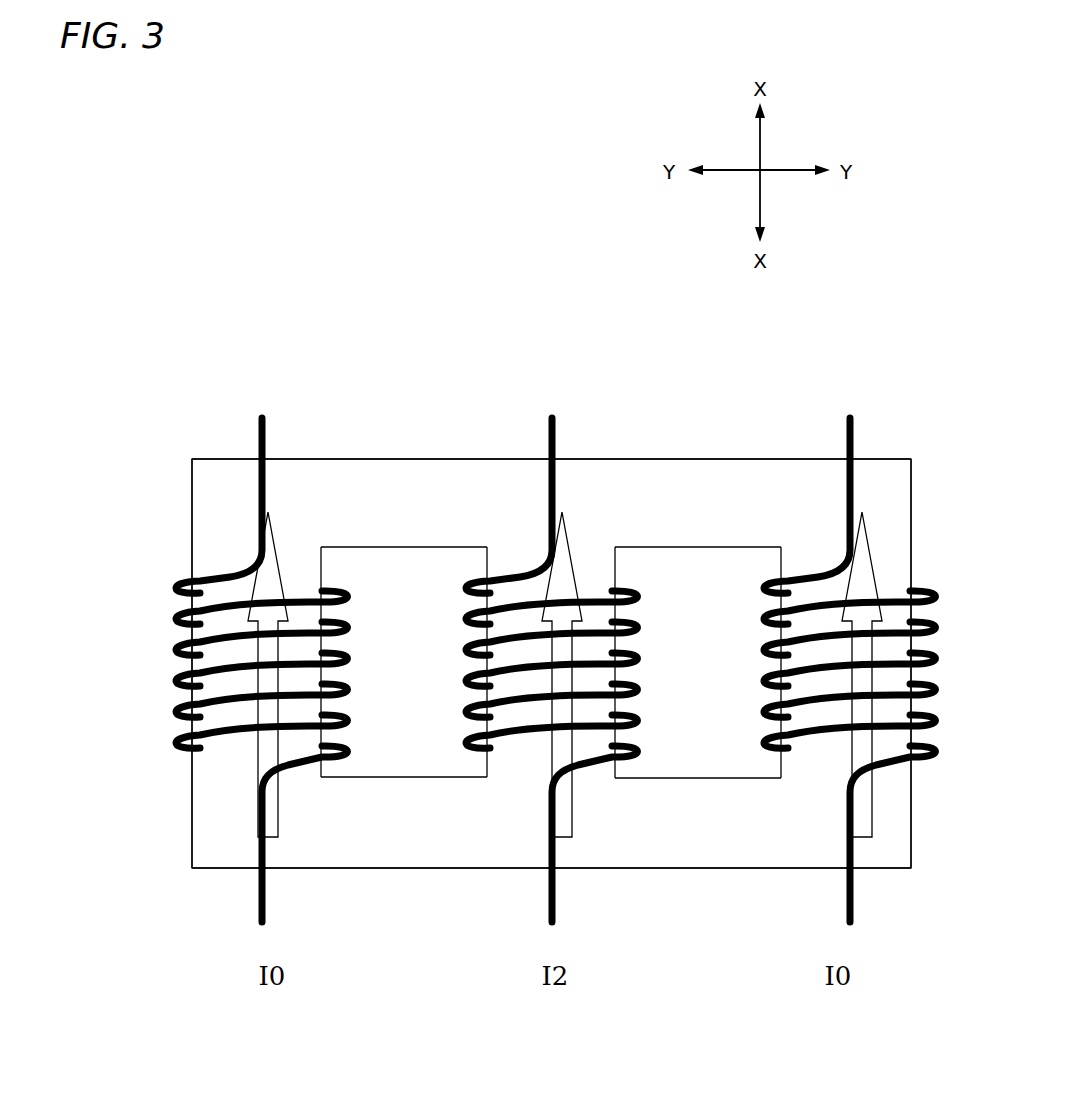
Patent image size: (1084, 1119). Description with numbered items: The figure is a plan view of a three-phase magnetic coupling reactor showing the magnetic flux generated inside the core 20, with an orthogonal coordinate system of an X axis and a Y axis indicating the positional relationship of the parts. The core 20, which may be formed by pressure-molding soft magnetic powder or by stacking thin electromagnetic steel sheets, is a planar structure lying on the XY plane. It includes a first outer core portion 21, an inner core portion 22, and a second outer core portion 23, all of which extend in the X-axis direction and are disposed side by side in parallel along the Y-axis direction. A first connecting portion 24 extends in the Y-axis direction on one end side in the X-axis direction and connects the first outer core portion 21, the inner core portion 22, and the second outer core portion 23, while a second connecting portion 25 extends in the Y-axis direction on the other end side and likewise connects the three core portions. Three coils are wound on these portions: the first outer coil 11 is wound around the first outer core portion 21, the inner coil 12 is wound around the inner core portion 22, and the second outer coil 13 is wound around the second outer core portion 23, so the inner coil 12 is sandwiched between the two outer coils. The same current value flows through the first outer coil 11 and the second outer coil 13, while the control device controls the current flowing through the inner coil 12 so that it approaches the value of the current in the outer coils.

The first outer coil 11 is at (220, 572).
The inner coil 12 is at (472, 642).
The second outer coil 13 is at (767, 642).
The core 20 is at (330, 459).
The first outer core portion 21 is at (222, 765).
The inner core portion 22 is at (513, 760).
The second outer core portion 23 is at (803, 762).
The first connecting portion 24 is at (718, 498).
The second connecting portion 25 is at (383, 843).